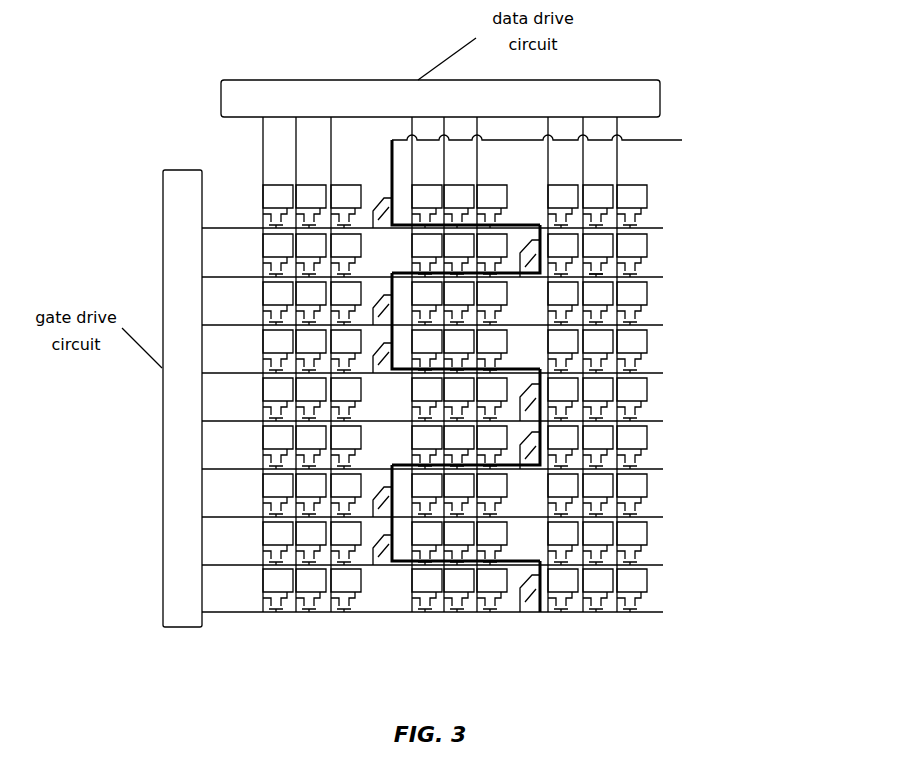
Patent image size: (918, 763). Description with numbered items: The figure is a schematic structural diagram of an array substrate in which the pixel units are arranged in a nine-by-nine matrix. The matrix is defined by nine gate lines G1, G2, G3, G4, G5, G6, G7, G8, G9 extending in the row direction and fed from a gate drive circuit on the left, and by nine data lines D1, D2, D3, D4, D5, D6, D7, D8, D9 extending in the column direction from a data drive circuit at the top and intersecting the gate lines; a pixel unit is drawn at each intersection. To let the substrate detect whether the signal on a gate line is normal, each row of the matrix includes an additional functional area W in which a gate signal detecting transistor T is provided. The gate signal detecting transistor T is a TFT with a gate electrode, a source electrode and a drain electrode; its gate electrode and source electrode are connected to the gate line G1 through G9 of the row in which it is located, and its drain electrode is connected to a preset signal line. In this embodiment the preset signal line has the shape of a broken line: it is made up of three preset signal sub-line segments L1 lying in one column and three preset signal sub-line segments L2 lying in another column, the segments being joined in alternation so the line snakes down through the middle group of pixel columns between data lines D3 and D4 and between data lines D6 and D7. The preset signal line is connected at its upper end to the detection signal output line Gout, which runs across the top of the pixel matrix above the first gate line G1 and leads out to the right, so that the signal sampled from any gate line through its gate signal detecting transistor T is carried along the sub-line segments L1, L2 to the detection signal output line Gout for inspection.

The preset signal sub-line segment L1 is at (393, 176).
The preset signal sub-line segment L2 is at (540, 418).
The additional functional area W is at (585, 282).
The gate signal detecting transistor T is at (590, 287).
The detection signal output line Gout is at (682, 140).
The gate line G1 is at (432, 219).
The gate line G2 is at (432, 268).
The gate line G3 is at (432, 316).
The gate line G4 is at (432, 364).
The gate line G5 is at (432, 412).
The gate line G6 is at (432, 460).
The gate line G7 is at (432, 508).
The gate line G8 is at (432, 556).
The gate line G9 is at (432, 603).
The data line D1 is at (274, 364).
The data line D2 is at (307, 364).
The data line D3 is at (342, 364).
The data line D4 is at (423, 364).
The data line D5 is at (455, 364).
The data line D6 is at (488, 364).
The data line D7 is at (559, 364).
The data line D8 is at (594, 364).
The data line D9 is at (628, 364).